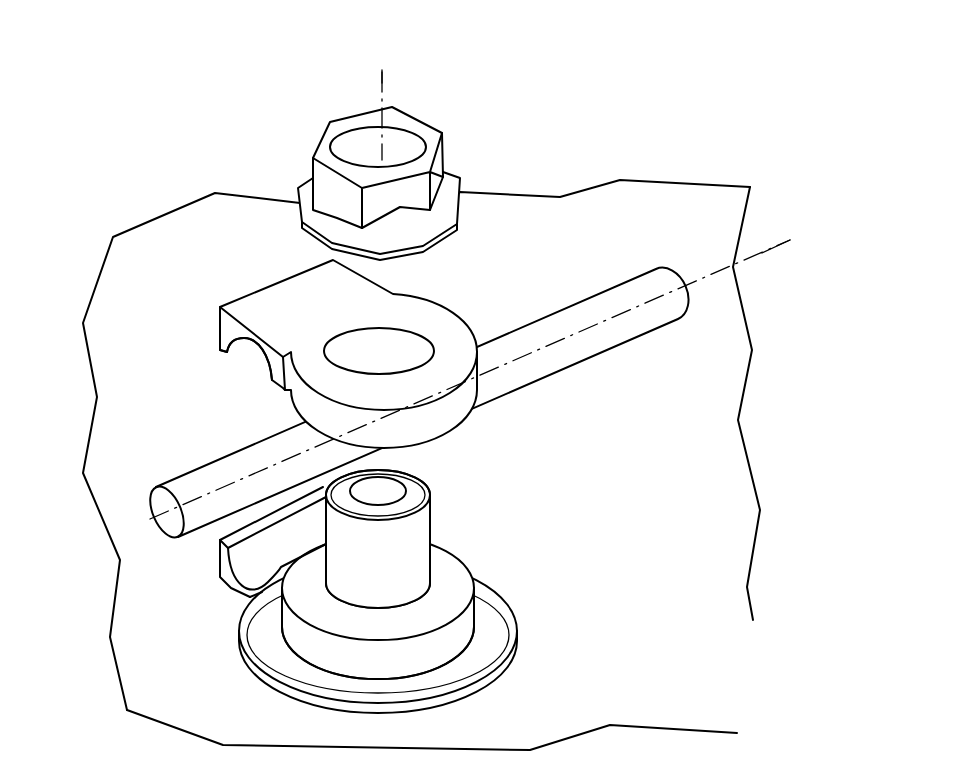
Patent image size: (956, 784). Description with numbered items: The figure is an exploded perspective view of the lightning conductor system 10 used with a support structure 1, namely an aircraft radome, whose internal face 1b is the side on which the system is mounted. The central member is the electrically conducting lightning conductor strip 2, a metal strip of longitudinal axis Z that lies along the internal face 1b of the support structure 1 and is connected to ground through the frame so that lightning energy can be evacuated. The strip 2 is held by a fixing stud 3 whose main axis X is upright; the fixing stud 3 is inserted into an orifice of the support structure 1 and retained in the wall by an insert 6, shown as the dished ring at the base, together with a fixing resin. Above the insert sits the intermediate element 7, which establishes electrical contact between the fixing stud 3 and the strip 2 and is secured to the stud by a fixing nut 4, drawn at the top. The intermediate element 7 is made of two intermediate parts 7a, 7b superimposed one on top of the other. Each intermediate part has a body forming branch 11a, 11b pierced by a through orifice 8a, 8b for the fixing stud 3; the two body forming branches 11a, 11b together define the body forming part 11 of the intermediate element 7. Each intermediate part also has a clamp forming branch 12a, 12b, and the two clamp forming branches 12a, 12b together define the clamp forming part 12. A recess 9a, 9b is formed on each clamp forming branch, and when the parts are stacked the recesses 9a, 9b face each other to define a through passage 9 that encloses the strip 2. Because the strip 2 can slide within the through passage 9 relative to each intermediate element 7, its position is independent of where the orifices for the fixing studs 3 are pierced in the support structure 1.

The support structure 1 is at (133, 660).
The internal face 1b is at (730, 383).
The lightning conductor strip 2 is at (597, 342).
The fixing stud 3 is at (412, 536).
The fixing nut 4 is at (337, 193).
The insert 6 is at (485, 640).
The intermediate element 7 is at (183, 600).
The intermediate part 7a is at (310, 640).
The intermediate part 7b is at (253, 590).
The through orifice 8a is at (440, 577).
The through orifice 8b is at (365, 350).
The through passage 9 is at (253, 413).
The recess 9a is at (280, 547).
The recess 9b is at (253, 350).
The lightning conductor system 10 is at (693, 140).
The body forming part 11 is at (548, 453).
The body forming branch 11a is at (357, 546).
The body forming branch 11b is at (325, 373).
The clamp forming part 12 is at (152, 383).
The clamp forming branch 12a is at (240, 533).
The clamp forming branch 12b is at (236, 340).
The main axis X is at (384, 77).
The longitudinal axis Z is at (773, 247).